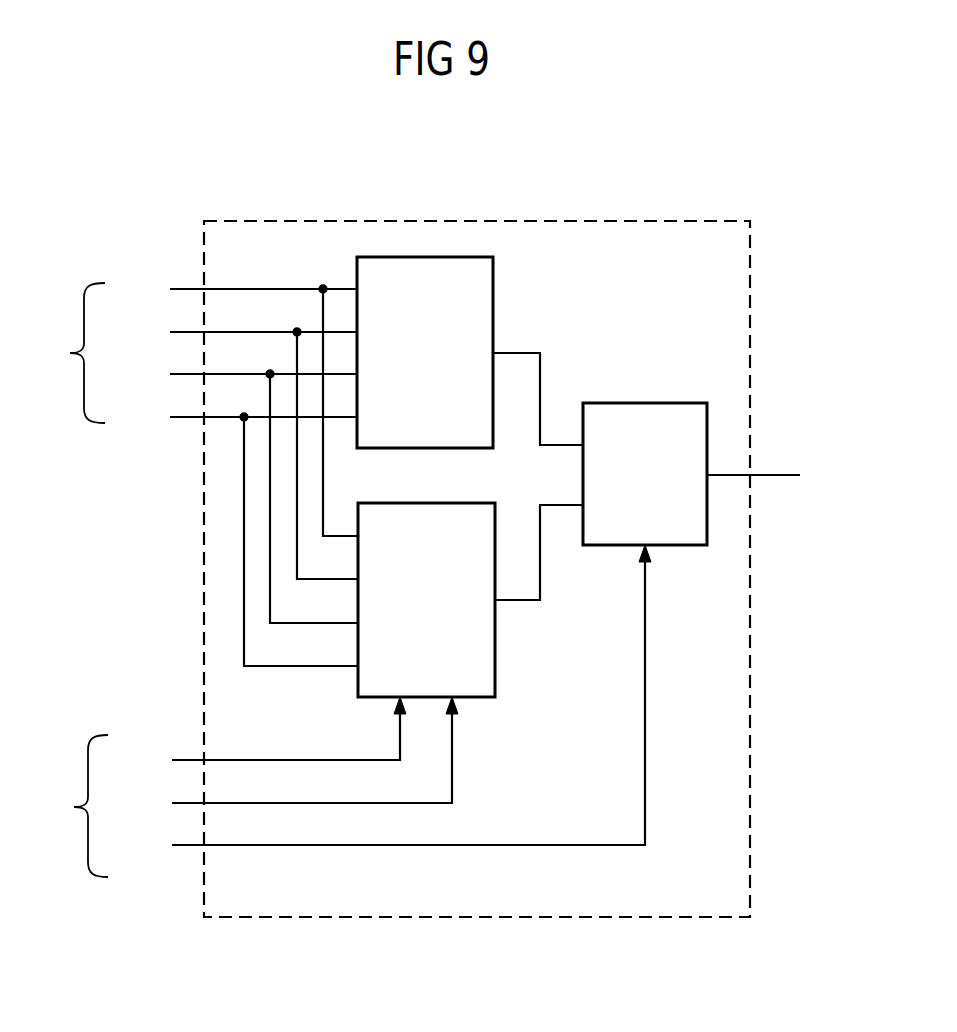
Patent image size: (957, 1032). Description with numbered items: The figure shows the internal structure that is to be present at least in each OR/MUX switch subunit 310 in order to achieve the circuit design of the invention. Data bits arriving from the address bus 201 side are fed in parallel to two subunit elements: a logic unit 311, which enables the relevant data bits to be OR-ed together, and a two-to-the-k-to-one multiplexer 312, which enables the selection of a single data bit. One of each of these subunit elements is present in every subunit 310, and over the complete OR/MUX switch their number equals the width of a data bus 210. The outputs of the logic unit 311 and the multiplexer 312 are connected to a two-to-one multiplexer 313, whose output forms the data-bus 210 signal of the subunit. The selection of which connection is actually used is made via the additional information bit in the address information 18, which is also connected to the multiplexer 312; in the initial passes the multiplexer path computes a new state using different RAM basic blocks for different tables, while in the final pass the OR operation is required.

The OR/MUX switch subunit 310 is at (464, 219).
The logic unit 311 is at (494, 298).
The 2^k:1 multiplexer 312 is at (496, 664).
The 2:1 multiplexer 313 is at (690, 546).
The data bus 210 is at (766, 471).
The address bus 201 is at (190, 474).
The address signals 18 is at (346, 711).